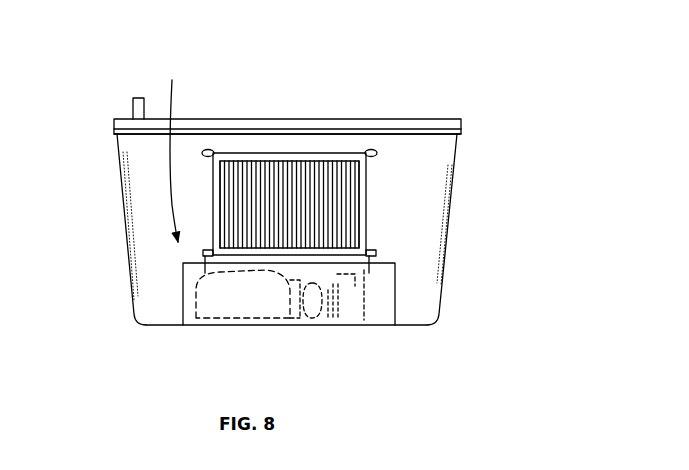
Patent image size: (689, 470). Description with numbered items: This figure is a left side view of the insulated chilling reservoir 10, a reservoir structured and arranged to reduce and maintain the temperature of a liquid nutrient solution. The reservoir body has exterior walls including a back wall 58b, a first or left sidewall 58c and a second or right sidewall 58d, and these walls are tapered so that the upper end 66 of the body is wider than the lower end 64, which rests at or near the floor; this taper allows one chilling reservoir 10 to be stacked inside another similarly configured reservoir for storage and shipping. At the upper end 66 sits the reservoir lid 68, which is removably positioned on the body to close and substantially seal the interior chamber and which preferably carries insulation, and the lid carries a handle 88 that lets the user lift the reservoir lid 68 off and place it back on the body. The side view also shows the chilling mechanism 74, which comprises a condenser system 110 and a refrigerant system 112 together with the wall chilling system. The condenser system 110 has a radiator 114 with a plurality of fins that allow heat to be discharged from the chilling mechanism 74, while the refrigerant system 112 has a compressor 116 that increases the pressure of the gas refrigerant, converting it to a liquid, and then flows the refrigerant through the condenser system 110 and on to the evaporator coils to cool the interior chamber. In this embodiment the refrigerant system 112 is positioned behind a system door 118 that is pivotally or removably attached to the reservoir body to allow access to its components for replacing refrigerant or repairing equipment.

The chilling reservoir 10 is at (297, 195).
The back wall 58b is at (123, 213).
The first or left sidewall 58c is at (400, 148).
The second or right sidewall 58d is at (457, 193).
The lower end 64 is at (131, 326).
The upper end 66 is at (108, 137).
The reservoir lid 68 is at (237, 119).
The chilling mechanism 74 is at (174, 150).
The handle 88 is at (133, 100).
The condenser system 110 is at (365, 173).
The refrigerant system 112 is at (284, 317).
The radiator 114 is at (288, 180).
The compressor 116 is at (217, 305).
The system door 118 is at (183, 298).